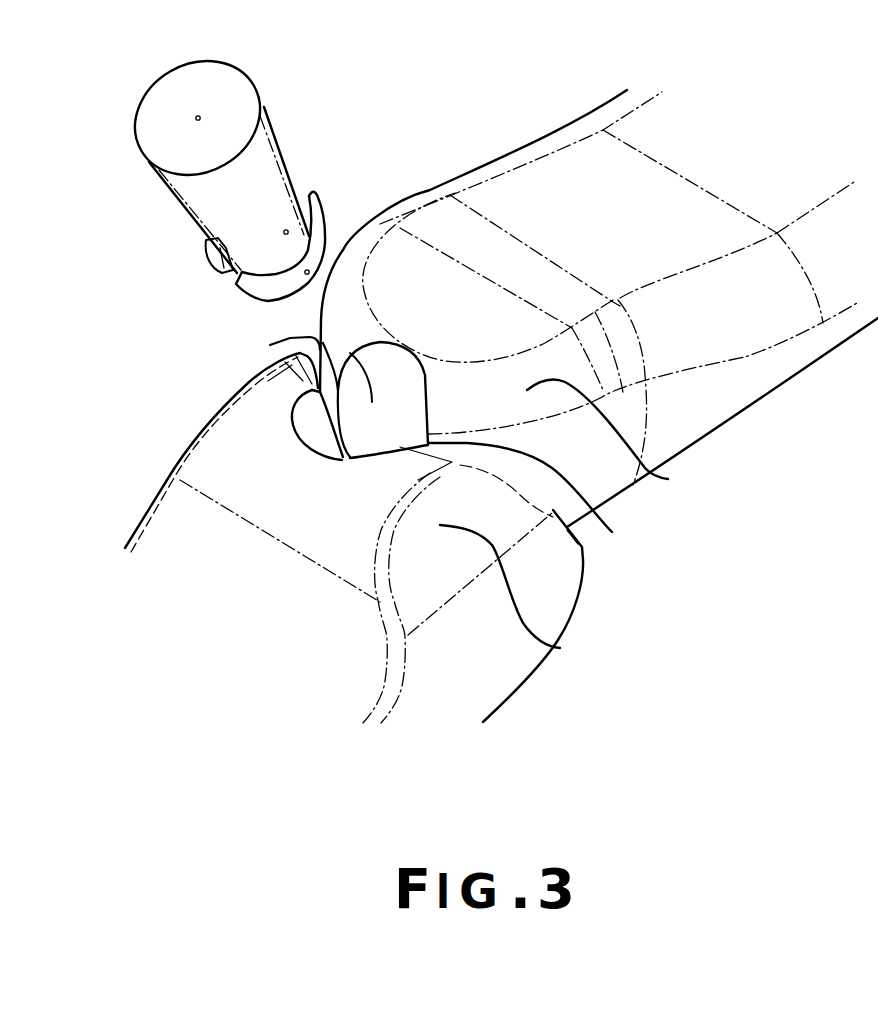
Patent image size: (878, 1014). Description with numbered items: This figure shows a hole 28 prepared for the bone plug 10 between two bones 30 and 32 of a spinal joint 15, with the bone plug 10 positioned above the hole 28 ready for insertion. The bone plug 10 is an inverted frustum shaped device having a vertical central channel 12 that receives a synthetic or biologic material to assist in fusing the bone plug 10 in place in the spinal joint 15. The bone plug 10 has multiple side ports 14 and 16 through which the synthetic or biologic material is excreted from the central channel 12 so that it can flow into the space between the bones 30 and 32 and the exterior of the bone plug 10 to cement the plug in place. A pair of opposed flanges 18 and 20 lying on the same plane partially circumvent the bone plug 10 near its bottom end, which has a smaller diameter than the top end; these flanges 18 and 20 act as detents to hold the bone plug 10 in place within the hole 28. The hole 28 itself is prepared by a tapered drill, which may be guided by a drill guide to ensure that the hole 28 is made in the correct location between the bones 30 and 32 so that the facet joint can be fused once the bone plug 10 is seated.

The bone plug 10 is at (264, 112).
The vertical central channel 12 is at (198, 116).
The side port 14 is at (285, 231).
The spinal joint 15 is at (612, 532).
The side port 16 is at (307, 276).
The flange 18 is at (326, 208).
The flange 20 is at (203, 250).
The hole 28 is at (270, 345).
The bone 30 is at (668, 479).
The bone 32 is at (553, 647).